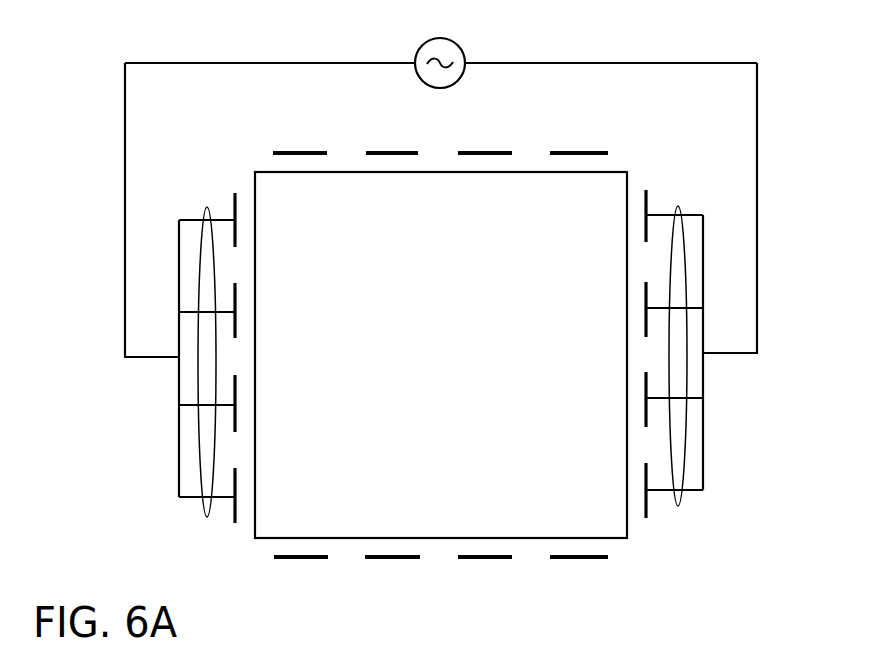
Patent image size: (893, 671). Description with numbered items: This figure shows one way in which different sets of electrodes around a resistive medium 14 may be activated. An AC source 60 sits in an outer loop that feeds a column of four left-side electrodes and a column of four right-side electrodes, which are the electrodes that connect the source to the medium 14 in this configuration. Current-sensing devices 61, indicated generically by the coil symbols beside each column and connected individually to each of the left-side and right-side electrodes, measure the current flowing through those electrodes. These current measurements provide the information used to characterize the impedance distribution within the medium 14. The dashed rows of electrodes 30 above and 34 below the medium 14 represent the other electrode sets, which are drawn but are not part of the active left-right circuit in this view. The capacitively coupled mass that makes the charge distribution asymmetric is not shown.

The resistive medium 14 is at (473, 327).
The first dashed electrode array (top) 30 is at (507, 125).
The second dashed electrode array (bottom) 34 is at (410, 580).
The AC source 60 is at (455, 43).
The current-sensing devices 61 is at (207, 517).